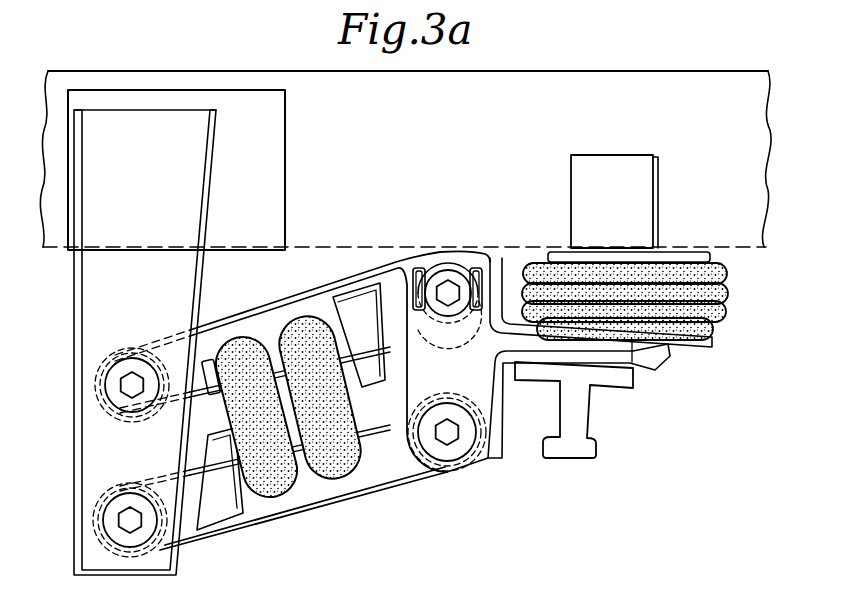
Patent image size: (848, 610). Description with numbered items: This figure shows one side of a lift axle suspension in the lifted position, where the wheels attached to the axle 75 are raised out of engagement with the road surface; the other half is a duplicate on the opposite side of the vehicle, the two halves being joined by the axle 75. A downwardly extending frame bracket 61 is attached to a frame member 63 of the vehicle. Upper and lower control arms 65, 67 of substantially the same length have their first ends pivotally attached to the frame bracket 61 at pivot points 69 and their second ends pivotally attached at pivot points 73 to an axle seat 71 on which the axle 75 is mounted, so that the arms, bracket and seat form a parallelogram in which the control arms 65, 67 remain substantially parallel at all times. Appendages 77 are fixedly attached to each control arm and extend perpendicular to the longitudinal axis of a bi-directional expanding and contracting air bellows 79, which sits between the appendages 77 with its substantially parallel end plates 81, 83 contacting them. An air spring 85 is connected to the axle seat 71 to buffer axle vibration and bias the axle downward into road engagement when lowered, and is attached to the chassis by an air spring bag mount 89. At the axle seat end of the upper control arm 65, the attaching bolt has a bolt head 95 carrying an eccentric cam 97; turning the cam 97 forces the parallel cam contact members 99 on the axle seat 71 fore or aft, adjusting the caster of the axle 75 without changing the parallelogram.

The frame bracket 61 is at (163, 112).
The frame member 63 is at (753, 128).
The upper control arm 65 is at (286, 310).
The lower control arm 67 is at (263, 510).
The pivot points 69 is at (128, 518).
The axle seat 71 is at (492, 353).
The pivot points 73 is at (452, 433).
The axle 75 is at (587, 441).
The appendages 77 is at (352, 302).
The air bellows 79 is at (347, 480).
The end plate 81 is at (213, 373).
The end plate 83 is at (368, 433).
The air spring 85 is at (728, 303).
The air spring bag mount 89 is at (625, 167).
The bolt head 95 is at (448, 280).
The eccentric cam 97 is at (450, 313).
The cam contact members 99 is at (422, 265).